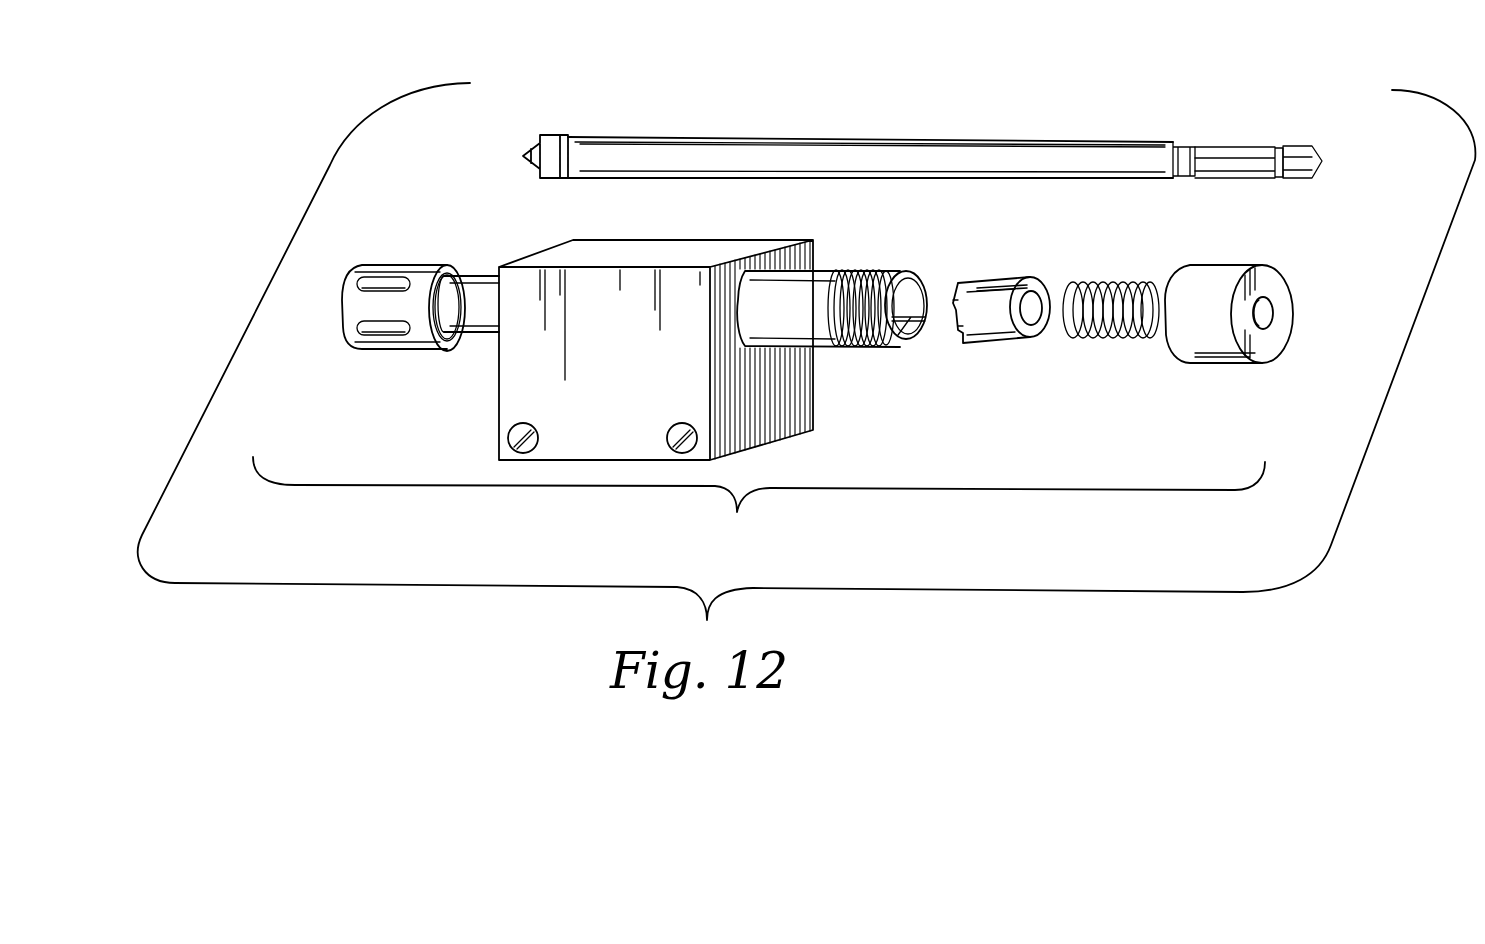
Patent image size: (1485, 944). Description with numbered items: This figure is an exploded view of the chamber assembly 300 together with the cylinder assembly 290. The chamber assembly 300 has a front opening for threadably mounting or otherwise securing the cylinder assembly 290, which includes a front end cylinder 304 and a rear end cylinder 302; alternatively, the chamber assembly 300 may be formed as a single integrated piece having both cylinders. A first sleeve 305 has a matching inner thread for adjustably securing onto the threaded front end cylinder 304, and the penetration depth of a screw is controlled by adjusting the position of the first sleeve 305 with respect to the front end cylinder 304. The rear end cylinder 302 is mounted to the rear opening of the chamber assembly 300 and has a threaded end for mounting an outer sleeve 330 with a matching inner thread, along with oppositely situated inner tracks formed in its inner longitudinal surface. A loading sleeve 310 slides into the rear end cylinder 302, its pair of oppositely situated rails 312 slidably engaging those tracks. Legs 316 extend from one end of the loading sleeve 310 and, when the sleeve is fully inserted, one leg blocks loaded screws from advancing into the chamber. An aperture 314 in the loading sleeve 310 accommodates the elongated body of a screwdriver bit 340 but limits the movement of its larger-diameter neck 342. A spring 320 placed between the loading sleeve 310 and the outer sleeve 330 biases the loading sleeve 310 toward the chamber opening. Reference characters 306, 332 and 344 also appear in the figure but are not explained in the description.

The cylinder assembly 290 is at (759, 502).
The chamber assembly 300 is at (540, 243).
The rear end cylinder 302 is at (825, 280).
The front end cylinder 304 is at (473, 312).
The first sleeve 305 is at (888, 338).
The screws 306 is at (690, 425).
The loading sleeve 310 is at (997, 283).
The rails 312 is at (1047, 330).
The aperture 314 is at (1040, 305).
The legs 316 is at (960, 333).
The spring 320 is at (1102, 340).
The outer sleeve 330 is at (1213, 363).
The aperture 332 is at (1272, 315).
The screwdriver bit 340 is at (988, 157).
The neck 342 is at (556, 136).
The rod shaft 344 is at (758, 153).